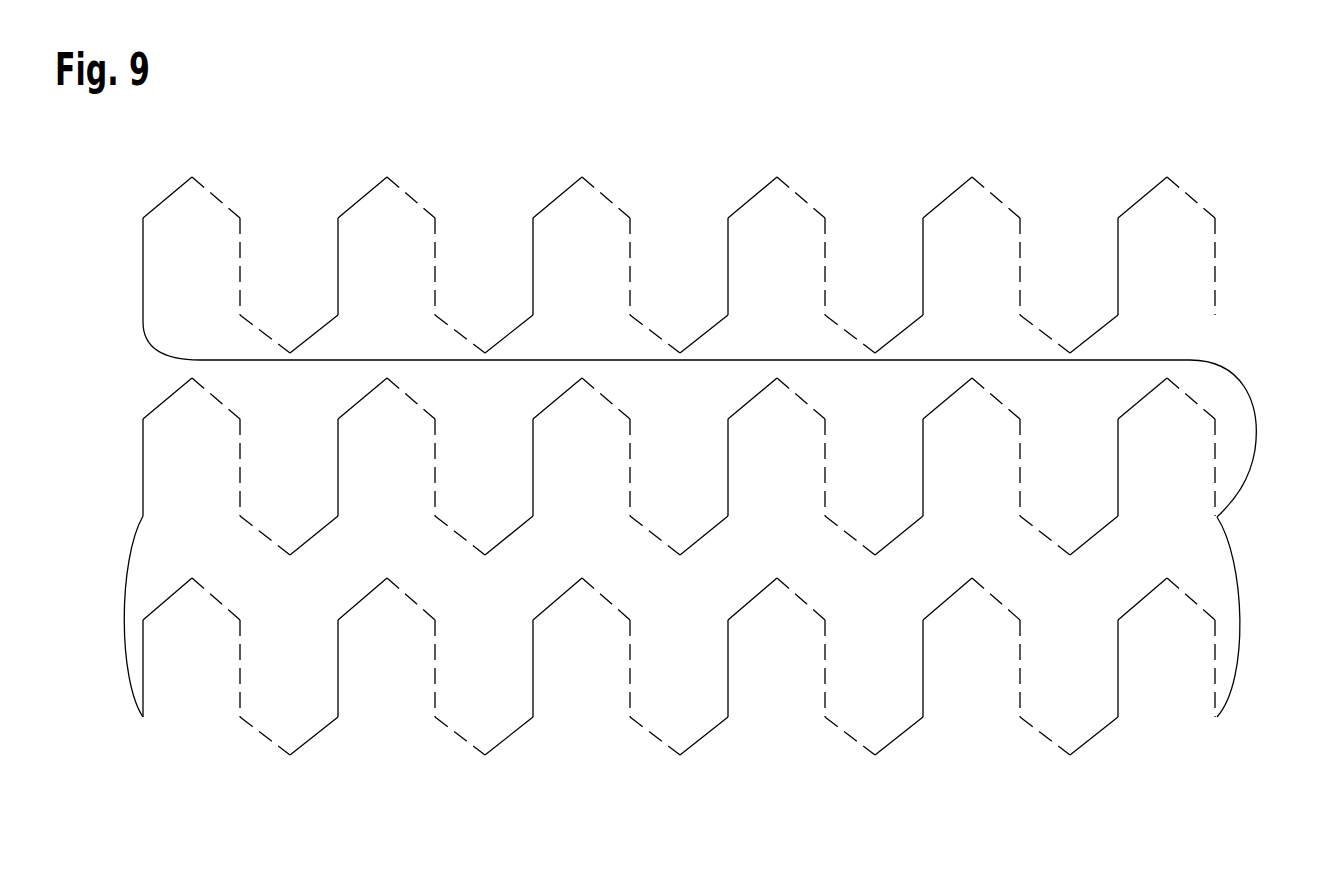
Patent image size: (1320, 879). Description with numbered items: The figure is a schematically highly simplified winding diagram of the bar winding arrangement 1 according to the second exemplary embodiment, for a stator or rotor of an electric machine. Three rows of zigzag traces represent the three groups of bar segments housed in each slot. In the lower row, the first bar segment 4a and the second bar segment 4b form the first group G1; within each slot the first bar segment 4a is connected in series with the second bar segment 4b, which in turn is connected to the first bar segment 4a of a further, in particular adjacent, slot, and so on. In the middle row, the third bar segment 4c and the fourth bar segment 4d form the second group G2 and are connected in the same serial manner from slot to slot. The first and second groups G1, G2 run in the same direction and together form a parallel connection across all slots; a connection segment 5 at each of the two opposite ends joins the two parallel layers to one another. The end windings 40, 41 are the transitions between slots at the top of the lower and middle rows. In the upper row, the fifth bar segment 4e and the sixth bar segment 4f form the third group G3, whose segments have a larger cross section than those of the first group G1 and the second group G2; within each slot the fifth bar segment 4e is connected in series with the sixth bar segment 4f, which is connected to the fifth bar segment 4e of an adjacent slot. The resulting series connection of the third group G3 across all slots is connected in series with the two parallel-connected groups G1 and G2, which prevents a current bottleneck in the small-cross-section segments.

The bar winding arrangement 1 is at (104, 465).
The connection segment 5 is at (118, 620).
The first bar segment 4a is at (143, 640).
The second bar segment 4b is at (240, 657).
The third bar segment 4c is at (143, 465).
The fourth bar segment 4d is at (240, 475).
The fifth bar segment 4e is at (143, 265).
The sixth bar segment 4f is at (240, 258).
The end winding 40 is at (188, 580).
The end winding 41 is at (187, 380).
The first group of bar segments G1 is at (157, 712).
The second group of bar segments G2 is at (152, 429).
The third group of bar segments G3 is at (152, 227).